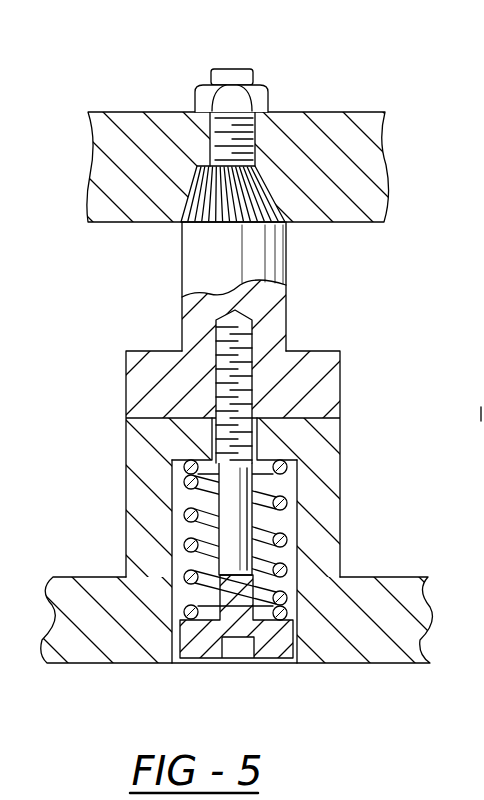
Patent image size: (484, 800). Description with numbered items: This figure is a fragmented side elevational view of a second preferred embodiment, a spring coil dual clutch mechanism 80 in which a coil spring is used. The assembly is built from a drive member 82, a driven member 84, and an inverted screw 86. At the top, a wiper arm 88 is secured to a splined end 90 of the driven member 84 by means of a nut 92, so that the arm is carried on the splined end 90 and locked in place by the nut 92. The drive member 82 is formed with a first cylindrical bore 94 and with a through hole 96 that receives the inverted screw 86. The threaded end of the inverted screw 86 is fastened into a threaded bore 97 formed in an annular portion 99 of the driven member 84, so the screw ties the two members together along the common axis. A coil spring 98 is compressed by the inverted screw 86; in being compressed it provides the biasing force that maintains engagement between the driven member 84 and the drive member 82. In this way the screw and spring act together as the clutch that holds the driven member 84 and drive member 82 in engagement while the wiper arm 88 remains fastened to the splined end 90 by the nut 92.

The fastening assembly 80 is at (136, 96).
The drive member 82 is at (130, 652).
The driven member 84 is at (273, 253).
The inverted screw 86 is at (293, 663).
The wiper arm 88 is at (358, 126).
The splined end 90 is at (208, 210).
The nut 92 is at (265, 94).
The first cylindrical bore 94 is at (292, 530).
The through hole 96 is at (253, 440).
The threaded bore 97 is at (252, 374).
The coil spring 98 is at (268, 498).
The annular portion 99 is at (323, 382).